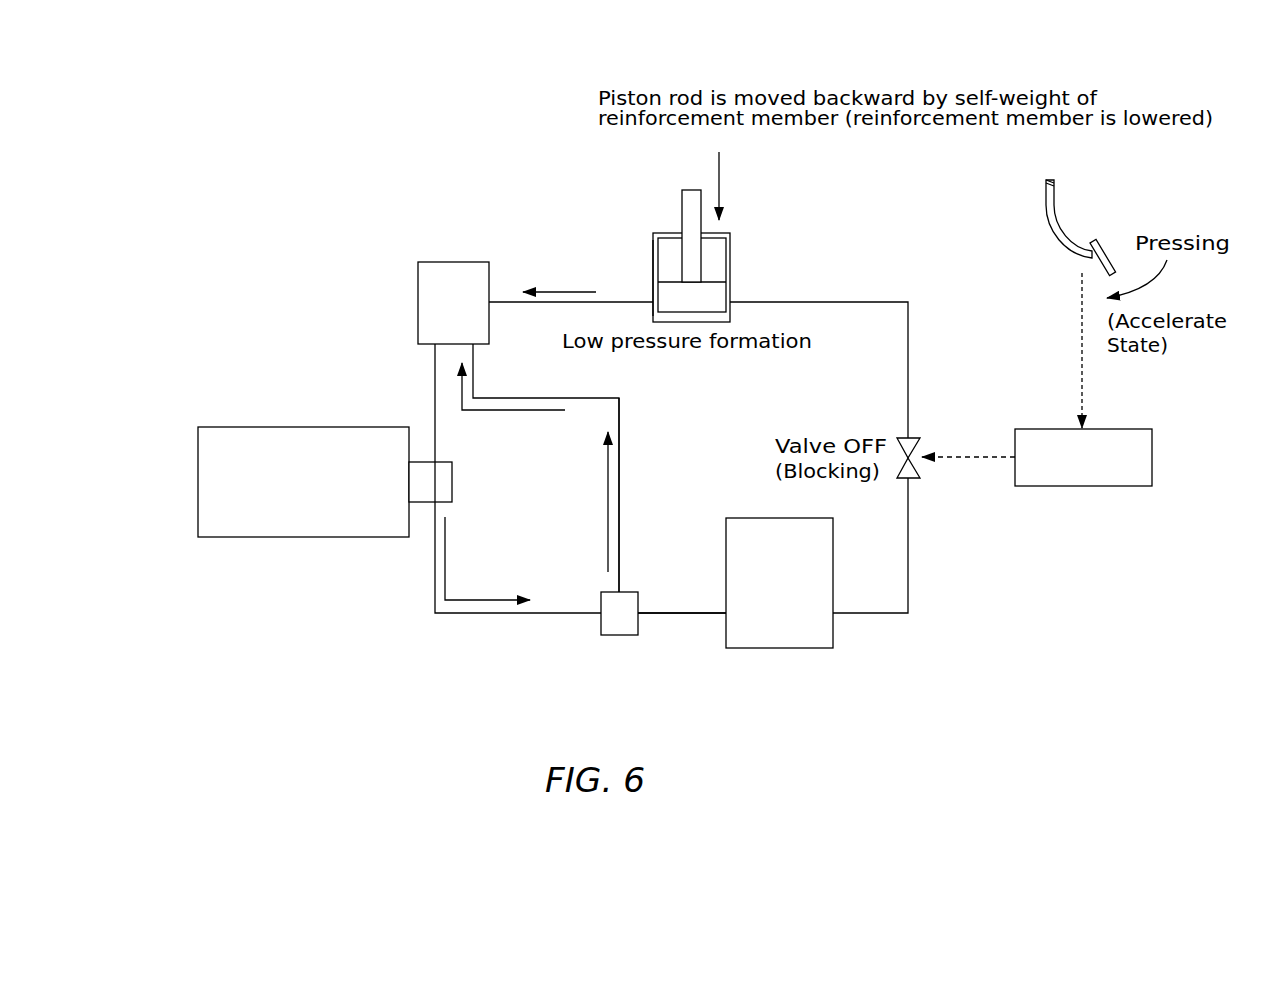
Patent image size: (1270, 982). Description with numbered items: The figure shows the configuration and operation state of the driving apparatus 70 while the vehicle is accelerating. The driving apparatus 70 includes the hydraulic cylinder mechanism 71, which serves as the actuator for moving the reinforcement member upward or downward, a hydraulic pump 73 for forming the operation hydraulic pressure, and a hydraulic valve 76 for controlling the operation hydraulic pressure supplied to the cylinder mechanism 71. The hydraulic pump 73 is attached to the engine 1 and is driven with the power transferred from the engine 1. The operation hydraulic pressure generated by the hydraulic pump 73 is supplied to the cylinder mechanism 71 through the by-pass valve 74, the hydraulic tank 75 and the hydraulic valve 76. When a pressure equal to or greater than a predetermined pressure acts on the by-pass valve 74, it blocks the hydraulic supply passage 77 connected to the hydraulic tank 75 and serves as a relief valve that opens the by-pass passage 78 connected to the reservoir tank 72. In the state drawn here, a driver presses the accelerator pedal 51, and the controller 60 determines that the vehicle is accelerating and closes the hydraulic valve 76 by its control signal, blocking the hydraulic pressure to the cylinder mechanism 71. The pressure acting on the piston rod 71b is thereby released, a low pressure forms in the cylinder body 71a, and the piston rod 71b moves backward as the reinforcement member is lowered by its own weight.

The engine 1 is at (272, 427).
The accelerator pedal 51 is at (1110, 243).
The controller 60 is at (1080, 488).
The driving apparatus 70 is at (858, 642).
The hydraulic cylinder mechanism 71 is at (702, 237).
The cylinder 71a is at (655, 247).
The piston rod 71b is at (687, 200).
The reservoir tank 72 is at (452, 262).
The hydraulic pump 73 is at (445, 480).
The by-pass valve 74 is at (617, 627).
The hydraulic tank 75 is at (777, 648).
The hydraulic valve 76 is at (912, 436).
The hydraulic supply passage 77 is at (680, 610).
The by-pass passage 78 is at (622, 435).